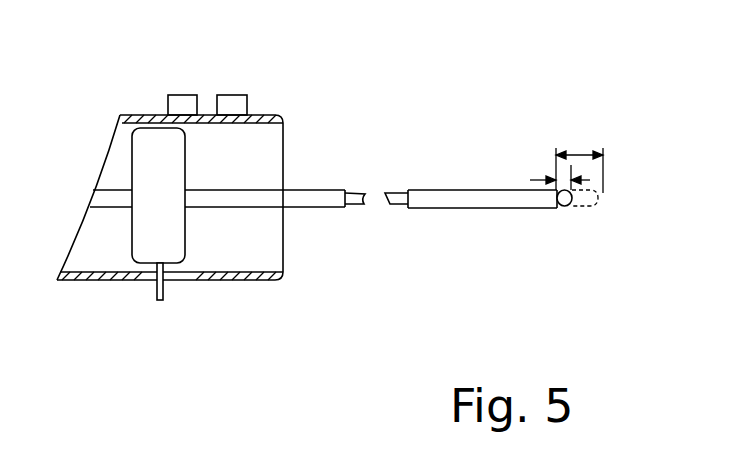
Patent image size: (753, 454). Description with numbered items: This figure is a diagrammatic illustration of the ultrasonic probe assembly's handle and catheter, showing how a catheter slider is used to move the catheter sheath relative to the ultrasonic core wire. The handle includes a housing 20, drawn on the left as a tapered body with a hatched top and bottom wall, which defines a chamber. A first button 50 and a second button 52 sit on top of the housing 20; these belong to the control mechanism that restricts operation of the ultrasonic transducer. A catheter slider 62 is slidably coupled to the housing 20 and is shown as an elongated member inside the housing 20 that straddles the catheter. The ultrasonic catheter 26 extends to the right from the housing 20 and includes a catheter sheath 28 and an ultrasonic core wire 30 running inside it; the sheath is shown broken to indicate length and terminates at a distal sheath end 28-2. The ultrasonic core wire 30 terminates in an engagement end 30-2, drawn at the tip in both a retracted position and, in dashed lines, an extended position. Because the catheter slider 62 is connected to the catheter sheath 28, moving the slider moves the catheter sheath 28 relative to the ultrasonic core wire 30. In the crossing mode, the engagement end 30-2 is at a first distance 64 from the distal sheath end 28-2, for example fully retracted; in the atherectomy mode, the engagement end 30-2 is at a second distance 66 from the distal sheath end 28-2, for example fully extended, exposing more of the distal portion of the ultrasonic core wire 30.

The housing 20 is at (85, 282).
The ultrasonic catheter 26 is at (542, 102).
The catheter sheath 28 is at (302, 190).
The distal sheath end 28-2 is at (560, 208).
The ultrasonic core wire 30 is at (357, 192).
The engagement end 30-2 is at (577, 205).
The first button 50 is at (233, 95).
The second button 52 is at (182, 95).
The catheter slider 62 is at (185, 242).
The first distance 64 is at (534, 178).
The second distance 66 is at (577, 148).